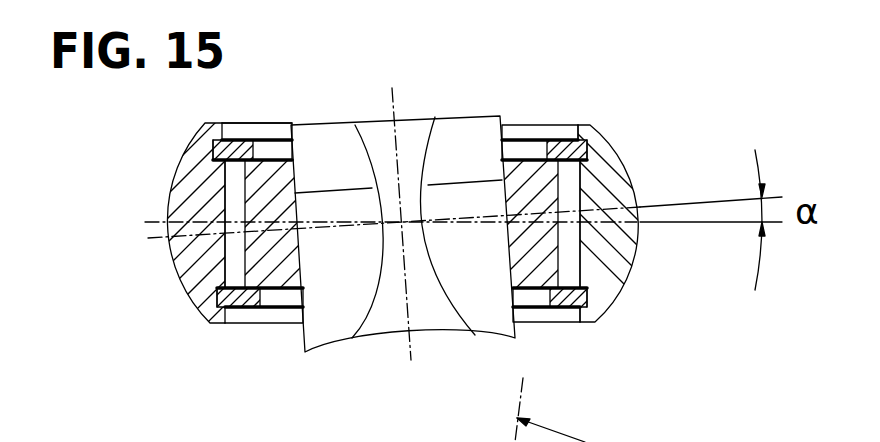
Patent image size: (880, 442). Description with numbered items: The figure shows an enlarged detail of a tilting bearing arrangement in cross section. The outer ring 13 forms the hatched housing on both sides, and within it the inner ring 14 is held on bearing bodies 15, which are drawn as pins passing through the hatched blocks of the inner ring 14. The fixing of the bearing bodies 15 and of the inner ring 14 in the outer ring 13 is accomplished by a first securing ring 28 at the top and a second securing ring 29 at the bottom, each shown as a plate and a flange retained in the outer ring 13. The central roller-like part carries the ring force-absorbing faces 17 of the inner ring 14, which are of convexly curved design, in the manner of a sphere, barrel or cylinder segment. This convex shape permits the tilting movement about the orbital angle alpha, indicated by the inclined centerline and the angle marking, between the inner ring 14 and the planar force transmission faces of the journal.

The outer ring 13 is at (210, 290).
The inner ring 14 is at (542, 182).
The bearing bodies 15 is at (238, 273).
The ring force-absorbing faces 17 is at (295, 273).
The first securing ring 28 is at (566, 143).
The second securing ring 29 is at (567, 305).